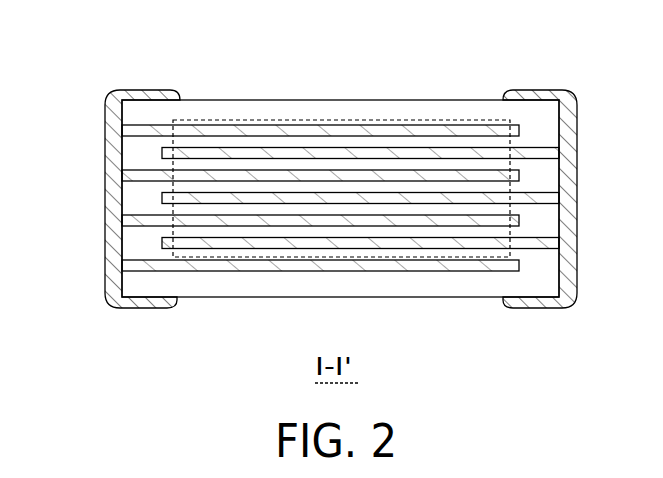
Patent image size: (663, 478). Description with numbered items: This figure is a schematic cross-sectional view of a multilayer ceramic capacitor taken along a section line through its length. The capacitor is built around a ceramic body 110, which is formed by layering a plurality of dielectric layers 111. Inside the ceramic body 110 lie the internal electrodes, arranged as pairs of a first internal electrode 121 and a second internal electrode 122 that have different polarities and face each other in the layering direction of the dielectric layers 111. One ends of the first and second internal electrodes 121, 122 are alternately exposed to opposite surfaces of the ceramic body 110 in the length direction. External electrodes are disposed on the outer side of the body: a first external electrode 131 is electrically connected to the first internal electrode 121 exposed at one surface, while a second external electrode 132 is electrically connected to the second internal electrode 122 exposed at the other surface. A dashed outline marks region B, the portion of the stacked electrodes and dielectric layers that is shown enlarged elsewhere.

The ceramic body 110 is at (302, 100).
The dielectric layer 111 is at (148, 199).
The first internal electrode 121 is at (128, 129).
The second internal electrode 122 is at (160, 154).
The first external electrode 131 is at (143, 91).
The second external electrode 132 is at (538, 90).
The region B is at (372, 120).